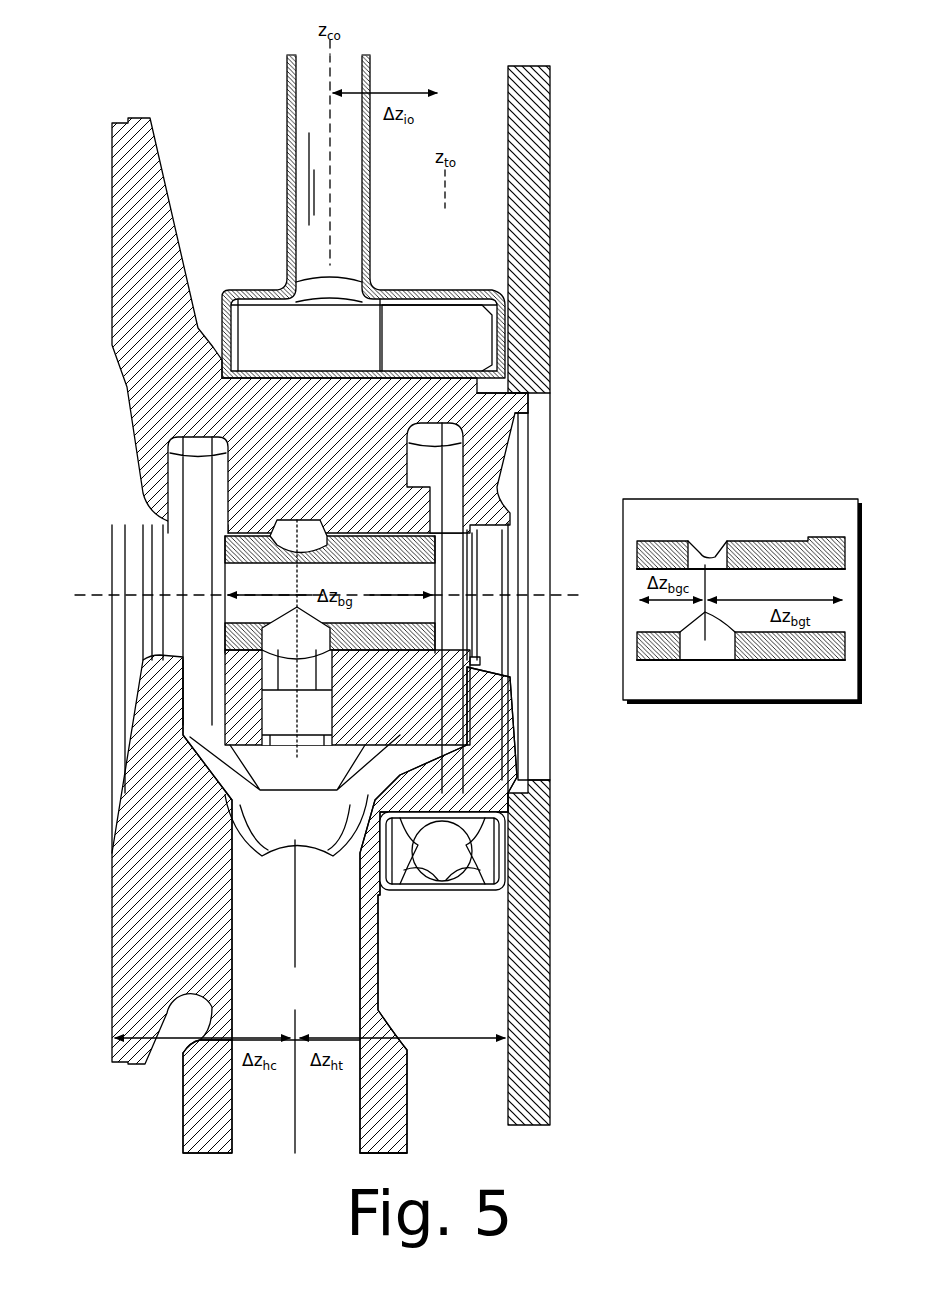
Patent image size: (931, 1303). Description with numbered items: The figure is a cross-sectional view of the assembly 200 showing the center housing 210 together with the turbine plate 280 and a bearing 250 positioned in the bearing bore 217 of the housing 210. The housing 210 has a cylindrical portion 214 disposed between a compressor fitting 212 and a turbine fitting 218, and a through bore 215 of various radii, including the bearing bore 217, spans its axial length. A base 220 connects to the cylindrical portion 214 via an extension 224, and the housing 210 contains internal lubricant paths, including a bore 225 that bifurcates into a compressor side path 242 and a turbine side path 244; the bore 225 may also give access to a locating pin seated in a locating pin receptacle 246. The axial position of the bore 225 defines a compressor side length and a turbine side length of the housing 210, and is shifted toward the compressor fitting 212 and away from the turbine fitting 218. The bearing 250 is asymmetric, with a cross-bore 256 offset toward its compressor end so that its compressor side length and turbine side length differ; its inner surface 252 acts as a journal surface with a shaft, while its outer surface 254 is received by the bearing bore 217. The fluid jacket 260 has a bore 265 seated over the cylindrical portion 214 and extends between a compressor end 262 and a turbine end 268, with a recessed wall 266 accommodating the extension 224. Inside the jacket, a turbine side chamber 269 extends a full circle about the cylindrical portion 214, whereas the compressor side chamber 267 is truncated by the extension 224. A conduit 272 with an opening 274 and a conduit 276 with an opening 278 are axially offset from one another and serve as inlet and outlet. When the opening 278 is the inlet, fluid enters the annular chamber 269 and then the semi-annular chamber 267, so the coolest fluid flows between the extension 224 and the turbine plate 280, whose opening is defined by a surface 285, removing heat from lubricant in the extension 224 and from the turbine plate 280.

The assembly 200 is at (220, 161).
The housing 210 is at (130, 118).
The compressor fitting 212 is at (112, 310).
The cylindrical portion 214 is at (350, 778).
The through bore 215 is at (500, 527).
The bearing bore 217 is at (355, 530).
The turbine fitting 218 is at (518, 413).
The base 220 is at (407, 1125).
The extension 224 is at (380, 1012).
The bore 225 is at (297, 996).
The compressor side path 242 is at (198, 581).
The turbine side path 244 is at (435, 608).
The locating pin receptacle 246 is at (313, 740).
The bearing 250 is at (742, 601).
The inner surface 252 is at (752, 566).
The outer surface 254 is at (818, 658).
The cross-bore 256 is at (692, 660).
The fluid jacket 260 is at (380, 293).
The compressor end 262 is at (222, 296).
The bore 265 is at (468, 377).
The recessed wall 266 is at (382, 850).
The compressor side chamber 267 is at (364, 335).
The turbine end 268 is at (505, 305).
The turbine side chamber 269 is at (442, 597).
The conduit 272 is at (371, 128).
The opening 274 is at (372, 54).
The conduit 276 is at (470, 873).
The opening 278 is at (410, 873).
The turbine plate 280 is at (550, 350).
The surface 285 is at (528, 405).